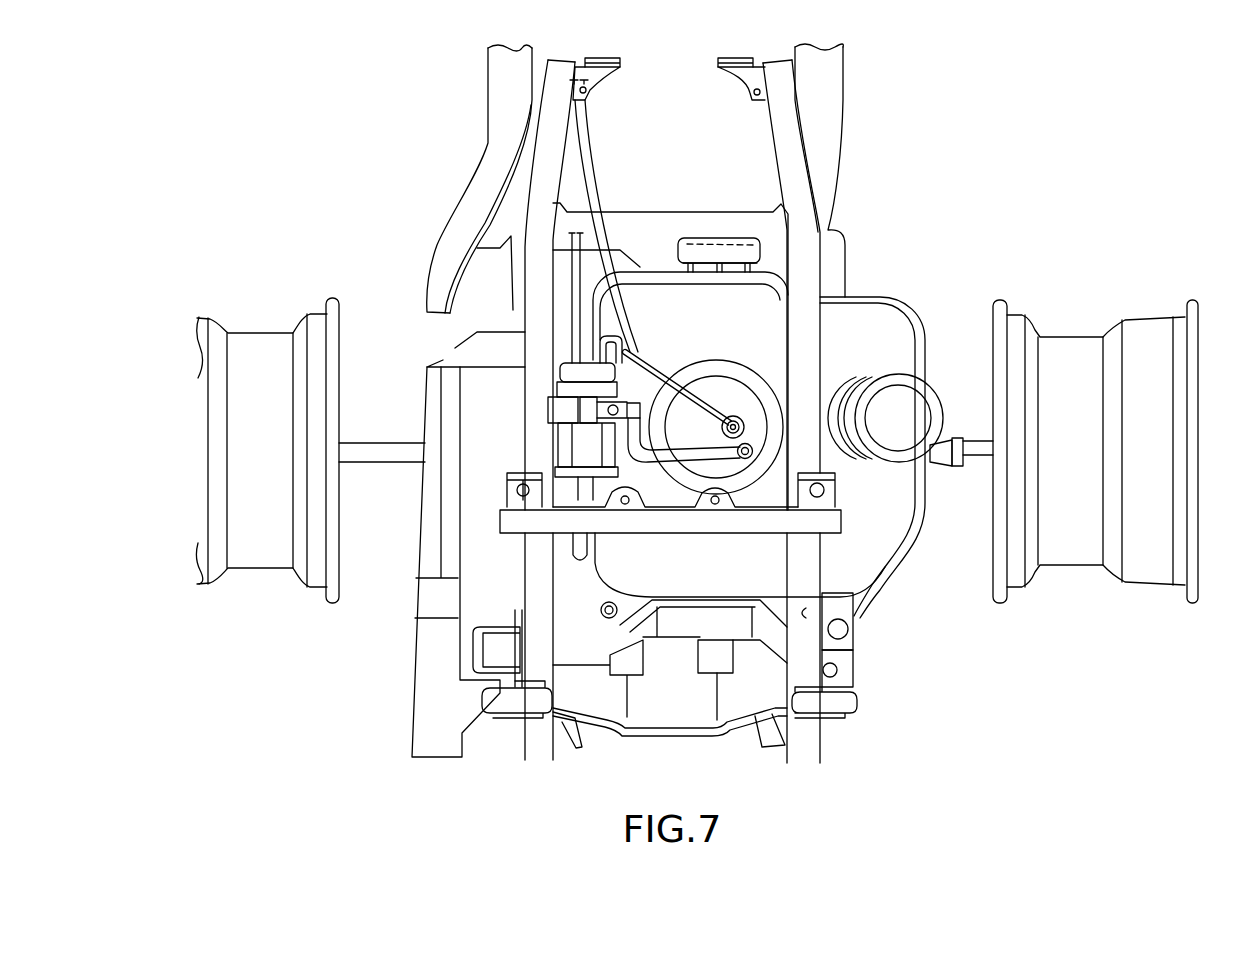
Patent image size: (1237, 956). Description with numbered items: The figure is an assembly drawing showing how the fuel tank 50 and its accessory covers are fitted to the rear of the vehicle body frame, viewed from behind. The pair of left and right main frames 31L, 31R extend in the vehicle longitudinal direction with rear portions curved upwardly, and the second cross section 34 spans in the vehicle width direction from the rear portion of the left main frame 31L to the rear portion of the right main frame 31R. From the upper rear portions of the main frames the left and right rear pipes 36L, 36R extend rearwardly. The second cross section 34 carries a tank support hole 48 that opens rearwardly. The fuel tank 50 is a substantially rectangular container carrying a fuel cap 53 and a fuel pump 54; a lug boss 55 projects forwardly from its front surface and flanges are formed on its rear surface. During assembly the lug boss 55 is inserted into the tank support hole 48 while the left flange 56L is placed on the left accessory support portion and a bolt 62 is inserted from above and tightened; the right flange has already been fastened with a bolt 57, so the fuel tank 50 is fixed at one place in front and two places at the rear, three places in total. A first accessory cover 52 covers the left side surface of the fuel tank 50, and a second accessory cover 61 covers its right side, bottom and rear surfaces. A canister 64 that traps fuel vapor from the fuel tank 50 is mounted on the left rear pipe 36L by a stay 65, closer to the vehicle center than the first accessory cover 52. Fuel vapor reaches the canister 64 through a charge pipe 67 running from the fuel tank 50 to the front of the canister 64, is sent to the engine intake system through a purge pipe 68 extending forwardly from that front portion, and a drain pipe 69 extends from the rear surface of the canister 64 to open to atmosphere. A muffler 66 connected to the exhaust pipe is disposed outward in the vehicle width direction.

The left main frame 31L is at (482, 177).
The right main frame 31R is at (825, 143).
The second cross section 34 is at (663, 226).
The left rear pipe 36L is at (533, 350).
The right rear pipe 36R is at (805, 345).
The tank support hole 48 is at (770, 265).
The fuel tank 50 is at (857, 522).
The first accessory cover 52 is at (556, 329).
The fuel cap 53 is at (912, 415).
The fuel pump 54 is at (707, 422).
The lug boss 55 is at (770, 273).
The left flange 56L is at (622, 608).
The bolt 57 is at (800, 613).
The second accessory cover 61 is at (922, 525).
The bolt 62 is at (608, 620).
The canister 64 is at (608, 368).
The stay 65 is at (603, 403).
The muffler 66 is at (430, 707).
The charge pipe 67 is at (678, 363).
The purge pipe 68 is at (565, 296).
The drain pipe 69 is at (573, 543).